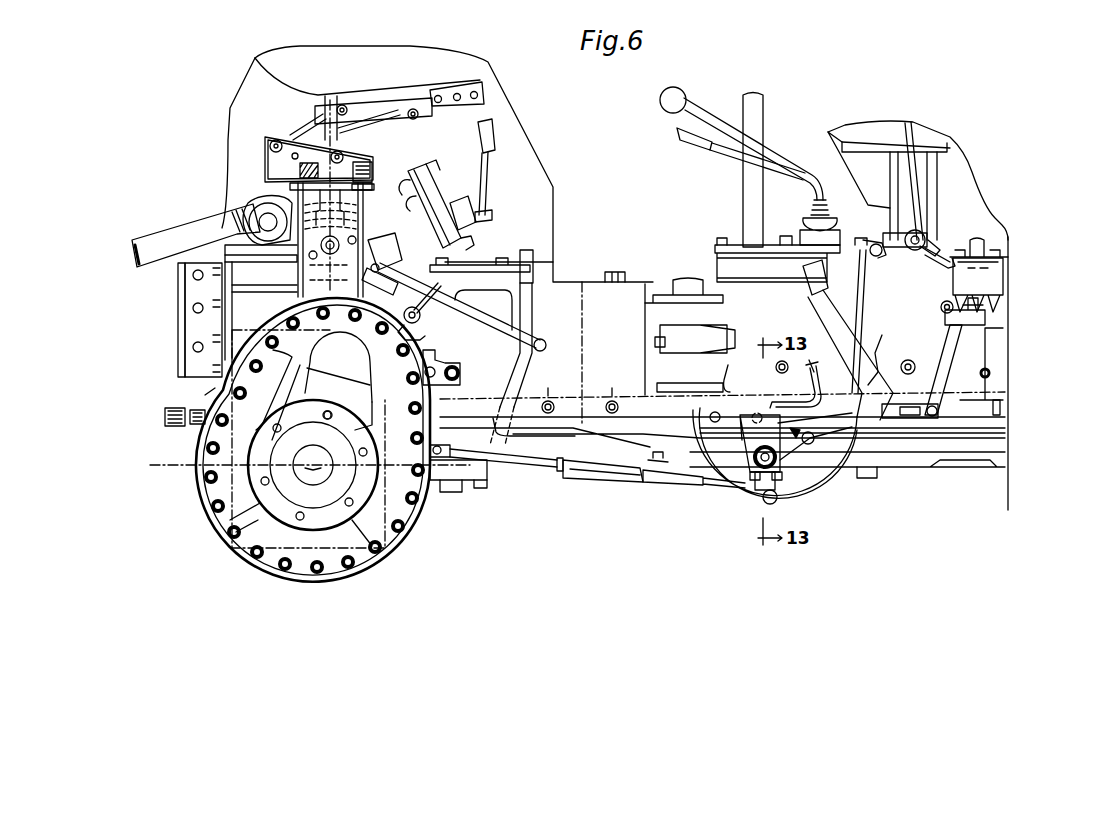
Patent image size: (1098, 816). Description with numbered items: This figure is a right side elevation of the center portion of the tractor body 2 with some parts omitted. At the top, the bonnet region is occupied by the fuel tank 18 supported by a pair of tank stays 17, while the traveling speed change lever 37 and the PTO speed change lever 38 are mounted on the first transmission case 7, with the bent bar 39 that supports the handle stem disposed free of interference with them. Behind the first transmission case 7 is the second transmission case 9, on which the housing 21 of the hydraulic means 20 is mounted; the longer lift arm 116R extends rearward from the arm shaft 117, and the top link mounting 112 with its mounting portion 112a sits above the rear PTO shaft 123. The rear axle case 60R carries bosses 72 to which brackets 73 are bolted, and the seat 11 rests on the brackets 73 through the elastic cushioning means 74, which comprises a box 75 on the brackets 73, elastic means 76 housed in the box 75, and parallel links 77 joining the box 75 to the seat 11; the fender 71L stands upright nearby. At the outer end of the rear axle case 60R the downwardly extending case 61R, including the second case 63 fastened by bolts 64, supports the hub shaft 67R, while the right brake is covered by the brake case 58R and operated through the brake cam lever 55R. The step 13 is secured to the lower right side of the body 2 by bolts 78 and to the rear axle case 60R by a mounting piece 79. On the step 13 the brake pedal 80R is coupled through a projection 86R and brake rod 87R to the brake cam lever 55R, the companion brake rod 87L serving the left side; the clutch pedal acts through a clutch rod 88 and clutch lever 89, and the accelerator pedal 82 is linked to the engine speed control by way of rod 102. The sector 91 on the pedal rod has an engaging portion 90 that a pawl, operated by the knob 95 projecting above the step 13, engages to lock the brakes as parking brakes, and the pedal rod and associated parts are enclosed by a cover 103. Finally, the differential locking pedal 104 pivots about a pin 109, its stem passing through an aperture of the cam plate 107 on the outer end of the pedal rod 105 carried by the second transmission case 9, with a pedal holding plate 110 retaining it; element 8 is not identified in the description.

The tractor body 2 is at (592, 270).
The first transmission case 7 is at (726, 290).
The clutch housing 8 is at (630, 283).
The second transmission case 9 is at (483, 290).
The seat 11 is at (406, 56).
The step 13 is at (478, 400).
The tank stays 17 is at (922, 190).
The fuel tank 18 is at (868, 192).
The hydraulic means 20 is at (236, 190).
The housing 21 is at (404, 184).
The traveling speed change lever 37 is at (705, 101).
The PTO speed change lever 38 is at (720, 158).
The bent bar 39 is at (763, 200).
The brake cam lever 55R is at (440, 432).
The brake case 58R is at (456, 360).
The rear axle case 60R is at (222, 389).
The case 61R is at (438, 500).
The second case 63 is at (240, 517).
The bolts 64 is at (206, 505).
The hub shaft 67R is at (314, 525).
The fender 71L is at (526, 135).
The bosses 72 is at (268, 322).
The brackets 73 is at (290, 288).
The elastic cushioning means 74 is at (252, 156).
The box 75 is at (264, 178).
The elastic means 76 is at (300, 169).
The parallel links 77 is at (296, 132).
The bolts 78 is at (587, 387).
The mounting piece 79 is at (372, 388).
The brake pedal 80R is at (826, 312).
The accelerator pedal 82 is at (820, 380).
The projection 86R is at (780, 497).
The brake rod 87R is at (622, 484).
The brake rod 87L is at (683, 486).
The clutch rod 88 is at (868, 390).
The clutch lever 89 is at (945, 356).
The engaging portion 90 is at (752, 452).
The sector 91 is at (790, 462).
The knob 95 is at (756, 374).
The rod 102 is at (866, 306).
The cover 103 is at (827, 487).
The differential locking pedal 104 is at (540, 338).
The pedal rod 105 is at (430, 337).
The cam plate 107 is at (424, 314).
The pin 109 is at (388, 262).
The pedal holding plate 110 is at (338, 367).
The top link mounting 112 is at (188, 366).
The mounting portion 112a is at (186, 328).
The lift arm 116R is at (182, 236).
The arm shaft 117 is at (268, 242).
The rear PTO shaft 123 is at (178, 428).